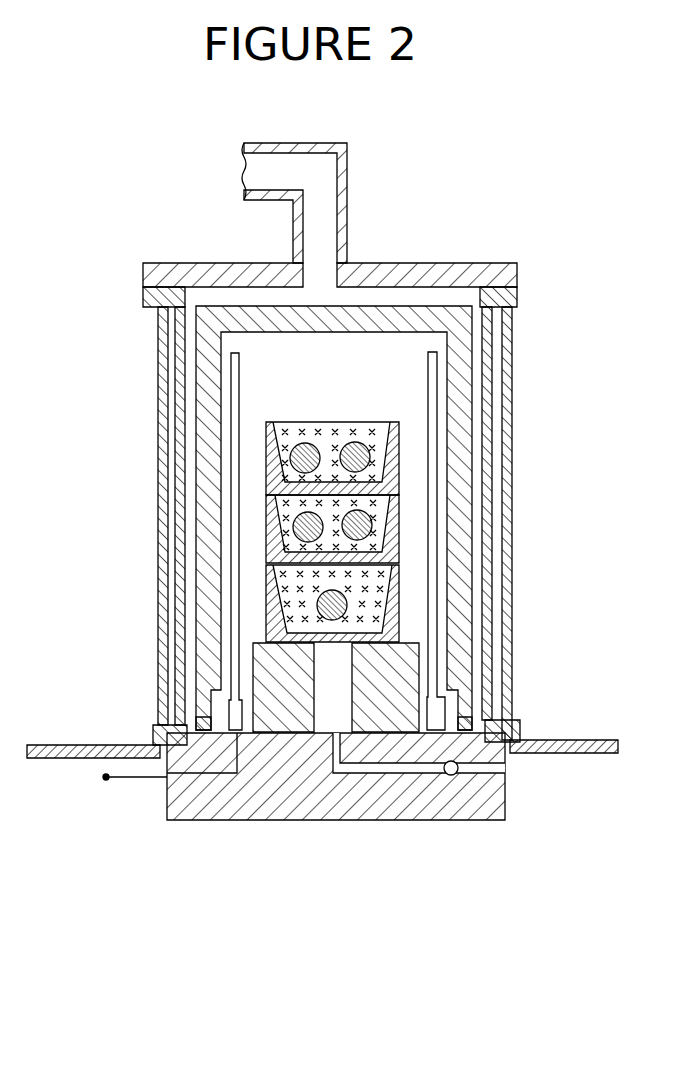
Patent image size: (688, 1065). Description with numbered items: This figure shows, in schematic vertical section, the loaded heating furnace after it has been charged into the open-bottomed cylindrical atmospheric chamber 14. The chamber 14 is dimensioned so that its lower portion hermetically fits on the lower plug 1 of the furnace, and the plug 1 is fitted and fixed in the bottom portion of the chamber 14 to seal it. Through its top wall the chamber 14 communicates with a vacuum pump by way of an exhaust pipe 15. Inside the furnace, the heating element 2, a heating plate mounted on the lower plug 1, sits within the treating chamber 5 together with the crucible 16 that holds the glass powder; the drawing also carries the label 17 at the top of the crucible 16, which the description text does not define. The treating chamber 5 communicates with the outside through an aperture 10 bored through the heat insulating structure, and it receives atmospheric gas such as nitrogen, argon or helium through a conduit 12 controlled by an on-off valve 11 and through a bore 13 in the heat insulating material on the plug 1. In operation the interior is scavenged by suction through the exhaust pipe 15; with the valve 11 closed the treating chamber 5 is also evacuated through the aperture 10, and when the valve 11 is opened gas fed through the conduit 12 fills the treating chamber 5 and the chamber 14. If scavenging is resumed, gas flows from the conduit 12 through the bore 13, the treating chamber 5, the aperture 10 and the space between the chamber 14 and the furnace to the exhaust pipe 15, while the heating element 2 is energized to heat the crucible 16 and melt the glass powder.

The lower plug 1 is at (264, 805).
The heating element 2 is at (232, 432).
The treating chamber 5 is at (413, 379).
The aperture 10 is at (205, 710).
The on-off valve 11 is at (440, 779).
The conduit 12 is at (482, 771).
The bore 13 is at (343, 700).
The atmospheric chamber 14 is at (458, 270).
The exhaust pipe 15 is at (349, 216).
The crucible 16 is at (400, 480).
The packing material 17 is at (373, 423).